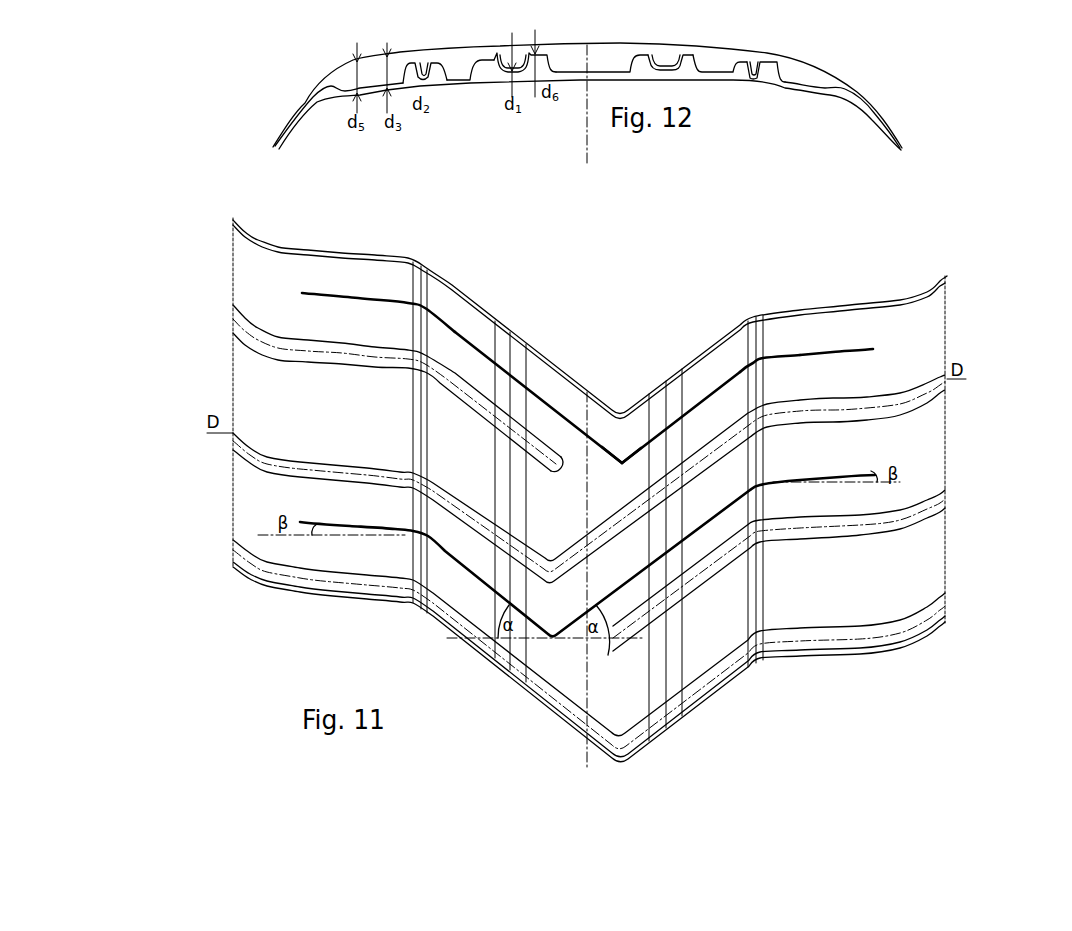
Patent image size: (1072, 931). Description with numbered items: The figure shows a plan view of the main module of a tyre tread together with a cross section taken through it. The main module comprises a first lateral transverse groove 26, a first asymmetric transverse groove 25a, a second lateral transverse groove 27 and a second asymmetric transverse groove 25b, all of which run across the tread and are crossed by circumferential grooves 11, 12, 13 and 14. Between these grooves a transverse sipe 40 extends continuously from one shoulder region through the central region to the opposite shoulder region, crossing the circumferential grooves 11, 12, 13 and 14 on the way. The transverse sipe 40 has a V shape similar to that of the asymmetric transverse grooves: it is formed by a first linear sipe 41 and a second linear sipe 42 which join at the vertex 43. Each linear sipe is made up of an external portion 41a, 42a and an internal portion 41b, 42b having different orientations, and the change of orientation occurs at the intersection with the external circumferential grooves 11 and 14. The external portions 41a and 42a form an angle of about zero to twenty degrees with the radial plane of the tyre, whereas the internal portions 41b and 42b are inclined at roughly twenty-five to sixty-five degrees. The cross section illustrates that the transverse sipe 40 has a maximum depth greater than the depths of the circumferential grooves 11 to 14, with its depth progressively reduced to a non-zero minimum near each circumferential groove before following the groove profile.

In FIG. 11, the circumferential groove 11 is at (422, 424).
In FIG. 12, the circumferential groove 11 is at (426, 54).
In FIG. 11, the circumferential groove 12 is at (511, 487).
In FIG. 12, the circumferential groove 12 is at (507, 60).
In FIG. 11, the circumferential groove 13 is at (665, 549).
In FIG. 11, the circumferential groove 14 is at (757, 476).
In FIG. 12, the circumferential groove 14 is at (755, 77).
In FIG. 11, the first lateral transverse groove 26 is at (235, 323).
In FIG. 11, the first asymmetric transverse groove 25a is at (238, 450).
In FIG. 12, the first asymmetric transverse groove 25a is at (445, 86).
In FIG. 11, the second lateral transverse groove 27 is at (905, 512).
In FIG. 11, the second asymmetric transverse groove 25b is at (903, 632).
In FIG. 11, the transverse sipe 40 is at (655, 461).
In FIG. 12, the transverse sipe 40 is at (782, 84).
In FIG. 11, the first linear sipe 41 is at (462, 378).
In FIG. 11, the external portion 41a is at (378, 312).
In FIG. 11, the internal portion 41b is at (537, 397).
In FIG. 11, the second linear sipe 42 is at (747, 406).
In FIG. 11, the external portion 42a is at (836, 369).
In FIG. 11, the internal portion 42b is at (681, 417).
In FIG. 11, the vertex 43 is at (621, 446).